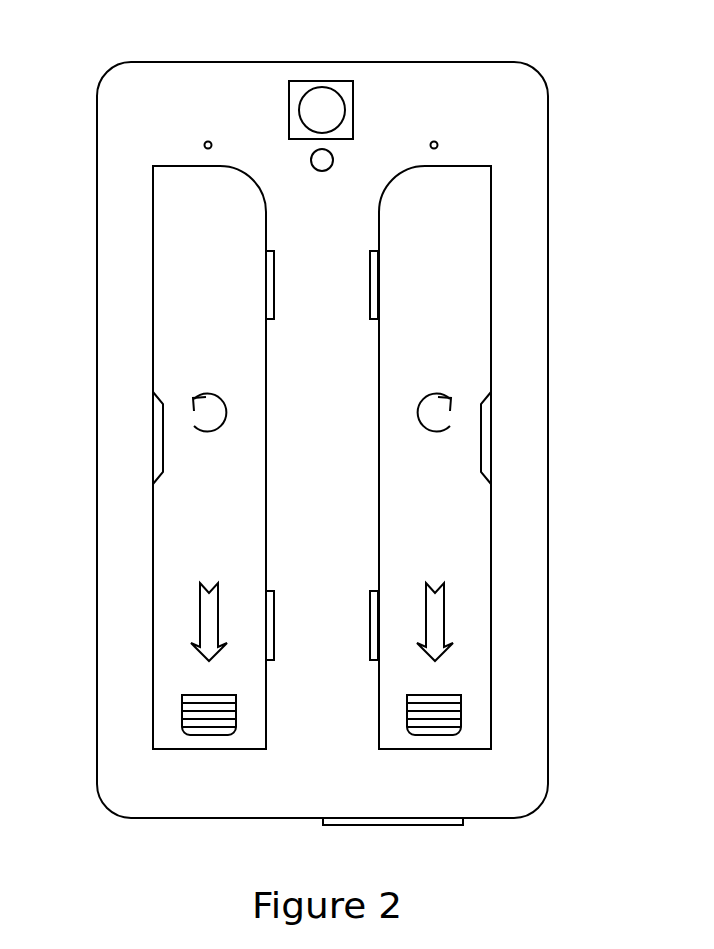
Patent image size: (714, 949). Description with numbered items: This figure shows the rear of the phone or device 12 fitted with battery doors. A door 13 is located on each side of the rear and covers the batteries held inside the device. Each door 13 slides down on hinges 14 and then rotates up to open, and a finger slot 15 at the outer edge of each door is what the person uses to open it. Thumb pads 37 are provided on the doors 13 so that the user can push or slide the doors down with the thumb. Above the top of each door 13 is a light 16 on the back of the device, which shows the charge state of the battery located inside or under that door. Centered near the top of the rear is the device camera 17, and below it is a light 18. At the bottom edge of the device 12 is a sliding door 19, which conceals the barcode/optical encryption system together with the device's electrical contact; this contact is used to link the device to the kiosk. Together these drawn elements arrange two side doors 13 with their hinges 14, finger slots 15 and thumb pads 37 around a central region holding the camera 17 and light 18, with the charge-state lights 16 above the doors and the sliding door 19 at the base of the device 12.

The phone or device 12 is at (322, 440).
The doors 13 is at (322, 457).
The hinges 14 is at (367, 330).
The finger slot 15 is at (142, 440).
The lights 16 is at (195, 145).
The device camera 17 is at (321, 70).
The light 18 is at (357, 85).
The sliding door 19 is at (470, 848).
The thumb pads 37 is at (171, 712).